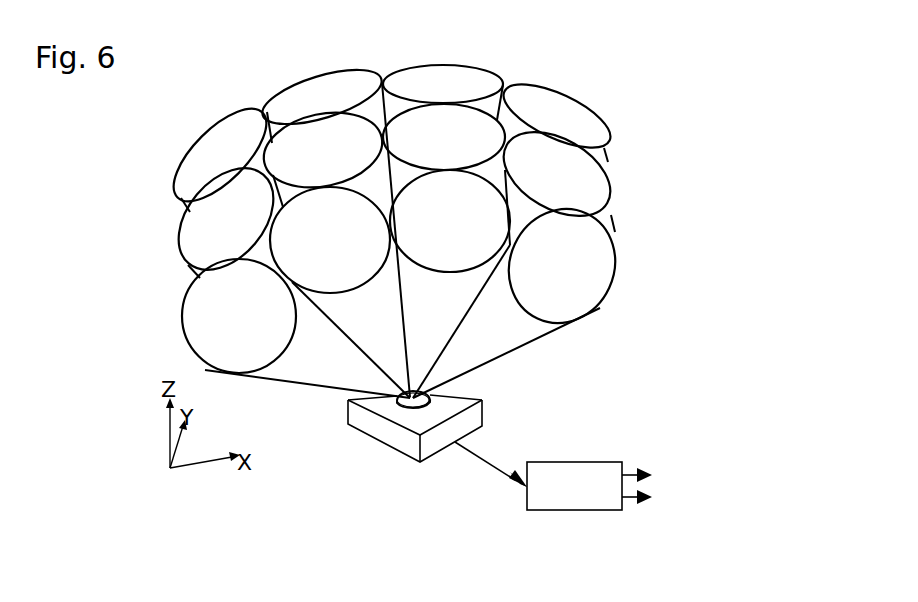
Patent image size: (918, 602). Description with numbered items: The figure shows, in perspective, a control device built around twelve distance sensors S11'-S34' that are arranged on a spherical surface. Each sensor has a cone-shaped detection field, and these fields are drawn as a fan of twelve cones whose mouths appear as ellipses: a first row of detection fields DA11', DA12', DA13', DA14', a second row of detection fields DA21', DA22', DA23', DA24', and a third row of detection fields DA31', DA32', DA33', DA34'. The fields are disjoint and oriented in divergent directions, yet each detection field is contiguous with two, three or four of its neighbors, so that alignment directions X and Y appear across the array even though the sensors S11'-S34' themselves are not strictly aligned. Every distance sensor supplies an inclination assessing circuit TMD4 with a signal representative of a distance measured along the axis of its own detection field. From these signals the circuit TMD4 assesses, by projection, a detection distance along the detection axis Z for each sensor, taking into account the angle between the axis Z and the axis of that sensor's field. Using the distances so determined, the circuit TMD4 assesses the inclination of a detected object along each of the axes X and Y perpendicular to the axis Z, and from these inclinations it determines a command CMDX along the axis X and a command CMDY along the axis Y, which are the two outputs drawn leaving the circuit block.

The detection field DA11' is at (193, 316).
The detection field DA12' is at (325, 310).
The detection field DA13' is at (520, 265).
The detection field DA14' is at (599, 265).
The detection field DA21' is at (185, 219).
The detection field DA22' is at (323, 109).
The detection field DA23' is at (444, 95).
The detection field DA24' is at (600, 174).
The detection field DA31' is at (193, 155).
The detection field DA32' is at (302, 96).
The detection field DA33' is at (468, 65).
The detection field DA34' is at (603, 116).
The distance sensors S11'-S34' is at (602, 402).
The inclination assessing circuit TMD4 is at (541, 497).
The command along the axis X CMDX is at (673, 475).
The command along the axis Y CMDY is at (672, 498).